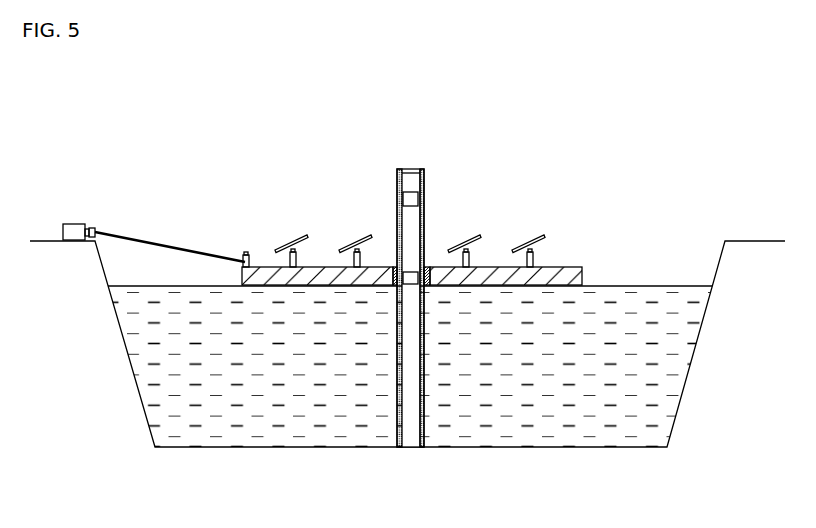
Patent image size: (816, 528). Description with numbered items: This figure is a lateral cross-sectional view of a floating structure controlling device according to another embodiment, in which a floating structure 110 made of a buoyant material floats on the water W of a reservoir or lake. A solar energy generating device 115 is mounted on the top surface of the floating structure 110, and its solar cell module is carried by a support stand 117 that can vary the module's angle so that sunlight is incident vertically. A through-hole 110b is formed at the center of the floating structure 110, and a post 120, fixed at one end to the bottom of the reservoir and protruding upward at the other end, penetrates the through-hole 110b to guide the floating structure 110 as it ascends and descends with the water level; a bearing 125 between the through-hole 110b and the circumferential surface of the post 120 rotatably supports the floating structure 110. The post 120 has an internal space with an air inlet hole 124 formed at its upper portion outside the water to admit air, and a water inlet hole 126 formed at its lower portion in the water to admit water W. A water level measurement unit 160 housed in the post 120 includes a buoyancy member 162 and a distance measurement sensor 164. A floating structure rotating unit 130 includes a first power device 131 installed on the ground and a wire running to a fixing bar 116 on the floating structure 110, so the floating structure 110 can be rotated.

The floating structure 110 is at (412, 350).
The through-hole 110b is at (428, 290).
The solar energy generating device 115 is at (289, 249).
The fixing bar 116 is at (245, 254).
The support stand 117 is at (297, 258).
The post 120 is at (429, 315).
The air inlet hole 124 is at (397, 183).
The bearing 125 is at (388, 284).
The water inlet hole 126 is at (432, 428).
The floating structure rotating unit 130 is at (153, 218).
The first power device 131 is at (76, 224).
The water level measurement unit 160 is at (457, 230).
The buoyancy member 162 is at (413, 271).
The distance measurement sensor 164 is at (423, 194).
The water W is at (638, 285).